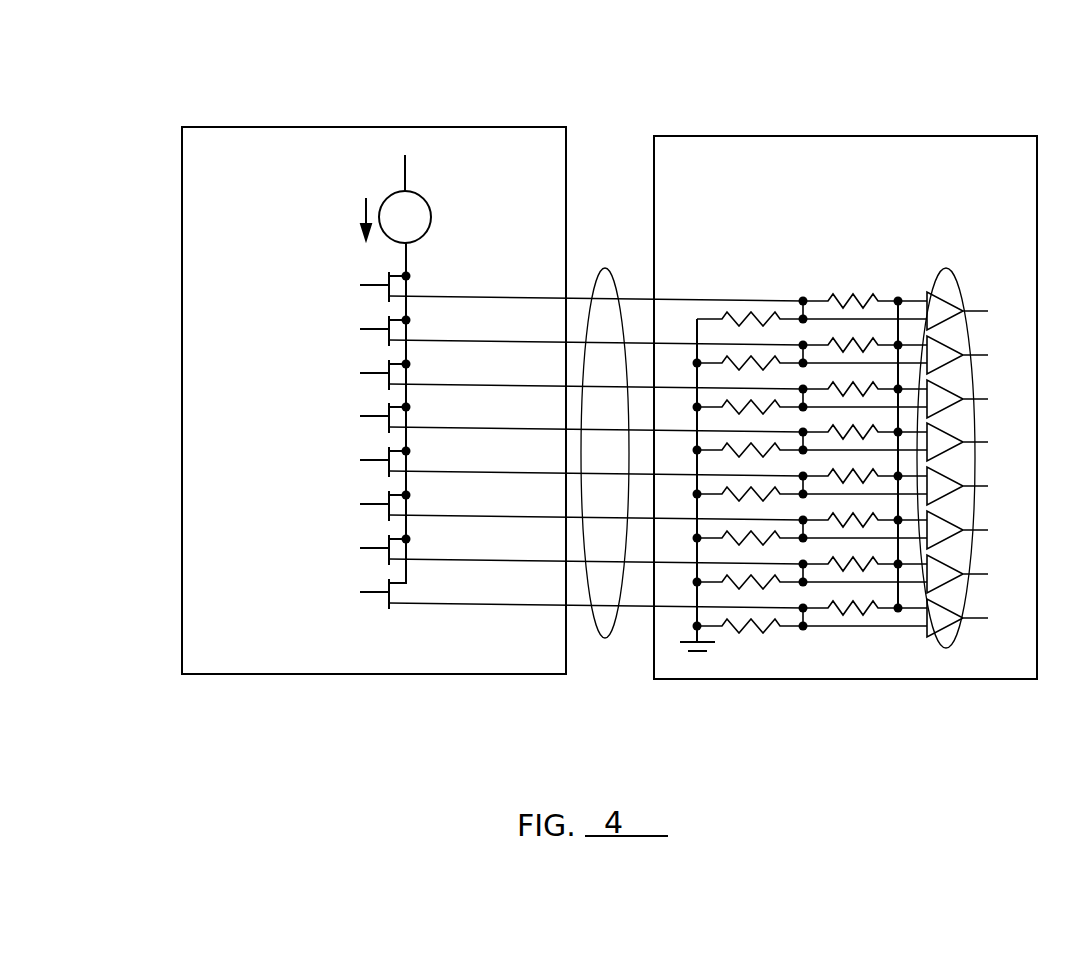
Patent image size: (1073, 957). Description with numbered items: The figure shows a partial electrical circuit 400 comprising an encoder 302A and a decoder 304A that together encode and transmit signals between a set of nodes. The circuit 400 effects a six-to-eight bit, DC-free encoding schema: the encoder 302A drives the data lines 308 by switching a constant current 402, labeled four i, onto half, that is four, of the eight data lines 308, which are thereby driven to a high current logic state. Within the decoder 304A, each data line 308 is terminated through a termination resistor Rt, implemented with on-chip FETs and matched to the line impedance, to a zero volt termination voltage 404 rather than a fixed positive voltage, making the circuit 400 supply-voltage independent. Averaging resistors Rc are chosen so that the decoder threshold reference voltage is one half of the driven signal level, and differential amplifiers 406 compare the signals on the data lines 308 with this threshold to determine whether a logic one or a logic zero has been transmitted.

The partial electrical circuit 400 is at (100, 49).
The encoder 302A is at (268, 127).
The decoder 304A is at (840, 136).
The data lines 308 is at (605, 268).
The constant current 402 is at (326, 222).
The zero volt termination voltage 404 is at (715, 655).
The differential amplifiers 406 is at (954, 270).